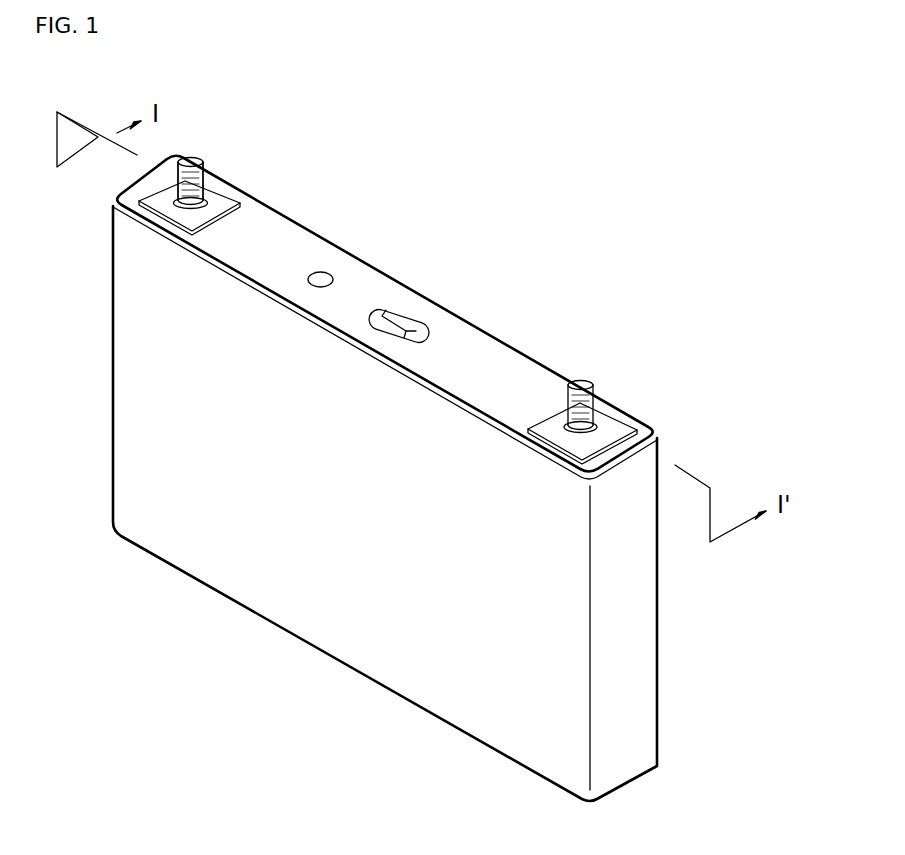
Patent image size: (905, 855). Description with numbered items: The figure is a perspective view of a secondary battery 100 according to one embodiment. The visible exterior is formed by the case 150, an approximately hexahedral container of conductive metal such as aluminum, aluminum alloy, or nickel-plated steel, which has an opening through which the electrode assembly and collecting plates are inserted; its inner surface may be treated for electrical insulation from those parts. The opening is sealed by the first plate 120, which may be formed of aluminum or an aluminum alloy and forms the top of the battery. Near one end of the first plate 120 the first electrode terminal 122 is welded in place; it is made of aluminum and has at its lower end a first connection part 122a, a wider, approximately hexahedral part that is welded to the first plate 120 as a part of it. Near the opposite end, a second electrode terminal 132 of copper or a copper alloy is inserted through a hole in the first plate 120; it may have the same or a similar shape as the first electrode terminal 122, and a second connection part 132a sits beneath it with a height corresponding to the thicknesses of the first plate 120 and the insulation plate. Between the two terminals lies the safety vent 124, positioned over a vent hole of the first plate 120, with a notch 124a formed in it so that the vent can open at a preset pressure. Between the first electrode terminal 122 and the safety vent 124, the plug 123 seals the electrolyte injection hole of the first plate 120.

The secondary battery 100 is at (638, 127).
The first plate 120 is at (467, 338).
The first electrode terminal 122 is at (191, 152).
The first connection part 122a is at (219, 200).
The plug 123 is at (322, 273).
The safety vent 124 is at (398, 309).
The notch 124a is at (407, 330).
The second electrode terminal 132 is at (583, 373).
The second connection part 132a is at (609, 425).
The case 150 is at (330, 640).